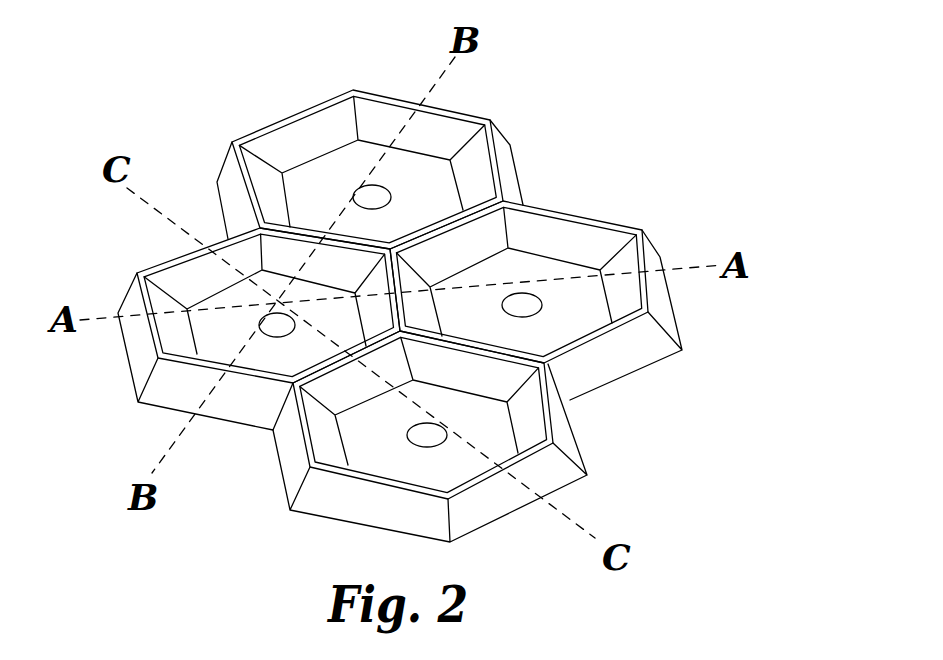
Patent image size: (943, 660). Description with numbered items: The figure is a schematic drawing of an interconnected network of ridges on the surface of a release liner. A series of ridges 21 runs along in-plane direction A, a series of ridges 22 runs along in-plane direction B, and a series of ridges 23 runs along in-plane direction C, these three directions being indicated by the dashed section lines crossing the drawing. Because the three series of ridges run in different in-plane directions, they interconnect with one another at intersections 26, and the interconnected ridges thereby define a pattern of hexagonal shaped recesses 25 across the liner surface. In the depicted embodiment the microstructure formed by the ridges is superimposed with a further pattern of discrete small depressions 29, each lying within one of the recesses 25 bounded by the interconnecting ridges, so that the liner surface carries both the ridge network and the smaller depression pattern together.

The ridges 21 is at (155, 344).
The ridges 22 is at (475, 117).
The ridges 23 is at (543, 457).
The hexagonal shaped recesses 25 is at (536, 306).
The intersections 26 is at (502, 198).
The discrete small depressions 29 is at (528, 305).